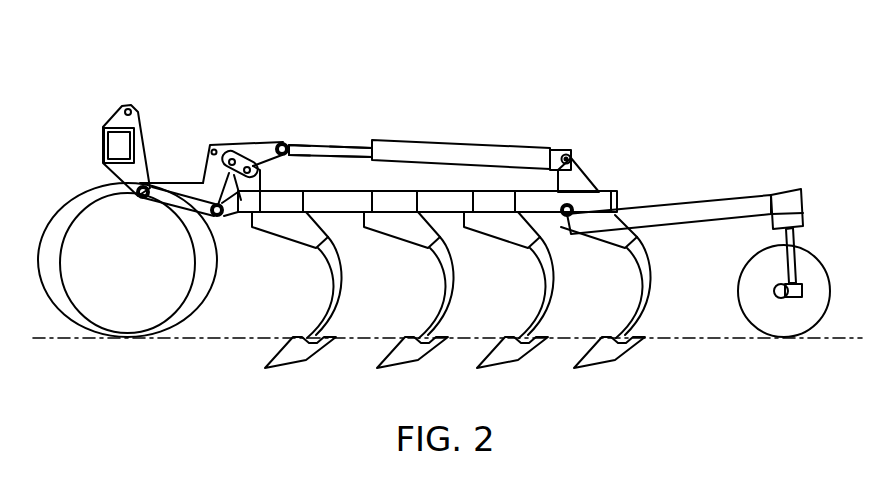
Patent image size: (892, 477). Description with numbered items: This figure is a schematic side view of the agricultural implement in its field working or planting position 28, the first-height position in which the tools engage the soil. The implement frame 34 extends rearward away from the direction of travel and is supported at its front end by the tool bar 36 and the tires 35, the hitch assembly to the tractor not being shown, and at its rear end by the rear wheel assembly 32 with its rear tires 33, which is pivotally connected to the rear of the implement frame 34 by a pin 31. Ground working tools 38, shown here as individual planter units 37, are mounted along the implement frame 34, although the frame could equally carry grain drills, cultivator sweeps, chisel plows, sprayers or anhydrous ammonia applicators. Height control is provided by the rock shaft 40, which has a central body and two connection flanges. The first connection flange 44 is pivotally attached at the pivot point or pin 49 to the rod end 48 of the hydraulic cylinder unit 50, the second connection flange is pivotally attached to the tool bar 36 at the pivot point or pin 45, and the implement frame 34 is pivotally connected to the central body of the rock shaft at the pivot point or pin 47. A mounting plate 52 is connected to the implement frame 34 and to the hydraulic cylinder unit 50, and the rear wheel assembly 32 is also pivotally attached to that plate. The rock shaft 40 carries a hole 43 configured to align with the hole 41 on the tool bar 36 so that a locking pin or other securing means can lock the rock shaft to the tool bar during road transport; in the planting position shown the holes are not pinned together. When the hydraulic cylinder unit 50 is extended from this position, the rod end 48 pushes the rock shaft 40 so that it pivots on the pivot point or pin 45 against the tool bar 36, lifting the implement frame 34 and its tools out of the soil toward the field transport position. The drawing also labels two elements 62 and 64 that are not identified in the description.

The planting position 28 is at (557, 60).
The pin 31 is at (582, 193).
The rear wheel assembly 32 is at (806, 196).
The rear tires 33 is at (737, 308).
The implement frame 34 is at (552, 153).
The tires 35 is at (50, 300).
The tool bar 36 is at (139, 127).
The planter units 37 is at (306, 358).
The ground working tools 38 is at (524, 368).
The rock shaft 40 is at (219, 148).
The hole 41 is at (125, 110).
The hole 43 is at (216, 148).
The first connection flange 44 is at (274, 146).
The pivot point or pin 45 is at (147, 186).
The pivot point or pin 47 is at (221, 216).
The rod end 48 is at (324, 146).
The pivot point or pin 49 is at (289, 142).
The hydraulic cylinder unit 50 is at (430, 116).
The mounting plate 52 is at (590, 166).
The cylinder barrel 62 is at (463, 141).
The rod 64 is at (352, 146).